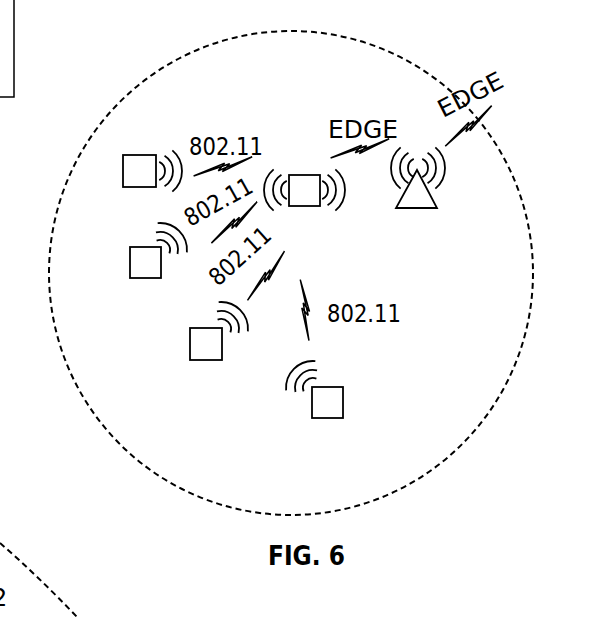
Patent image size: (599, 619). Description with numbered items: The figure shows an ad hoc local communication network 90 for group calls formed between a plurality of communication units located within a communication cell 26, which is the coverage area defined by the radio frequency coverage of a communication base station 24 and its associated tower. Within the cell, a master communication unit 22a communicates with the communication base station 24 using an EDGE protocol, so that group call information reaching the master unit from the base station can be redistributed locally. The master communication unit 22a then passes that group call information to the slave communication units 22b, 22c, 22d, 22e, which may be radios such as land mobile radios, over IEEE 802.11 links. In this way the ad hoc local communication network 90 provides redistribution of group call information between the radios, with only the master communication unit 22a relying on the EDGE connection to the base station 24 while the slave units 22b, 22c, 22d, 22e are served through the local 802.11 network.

The master communication unit 22a is at (305, 206).
The slave communication unit 22b is at (343, 402).
The slave communication unit 22c is at (193, 360).
The slave communication unit 22d is at (135, 278).
The slave communication unit 22e is at (123, 167).
The communication base station 24 is at (428, 190).
The communication cell 26 is at (374, 46).
The ad hoc local communication network 90 is at (60, 398).